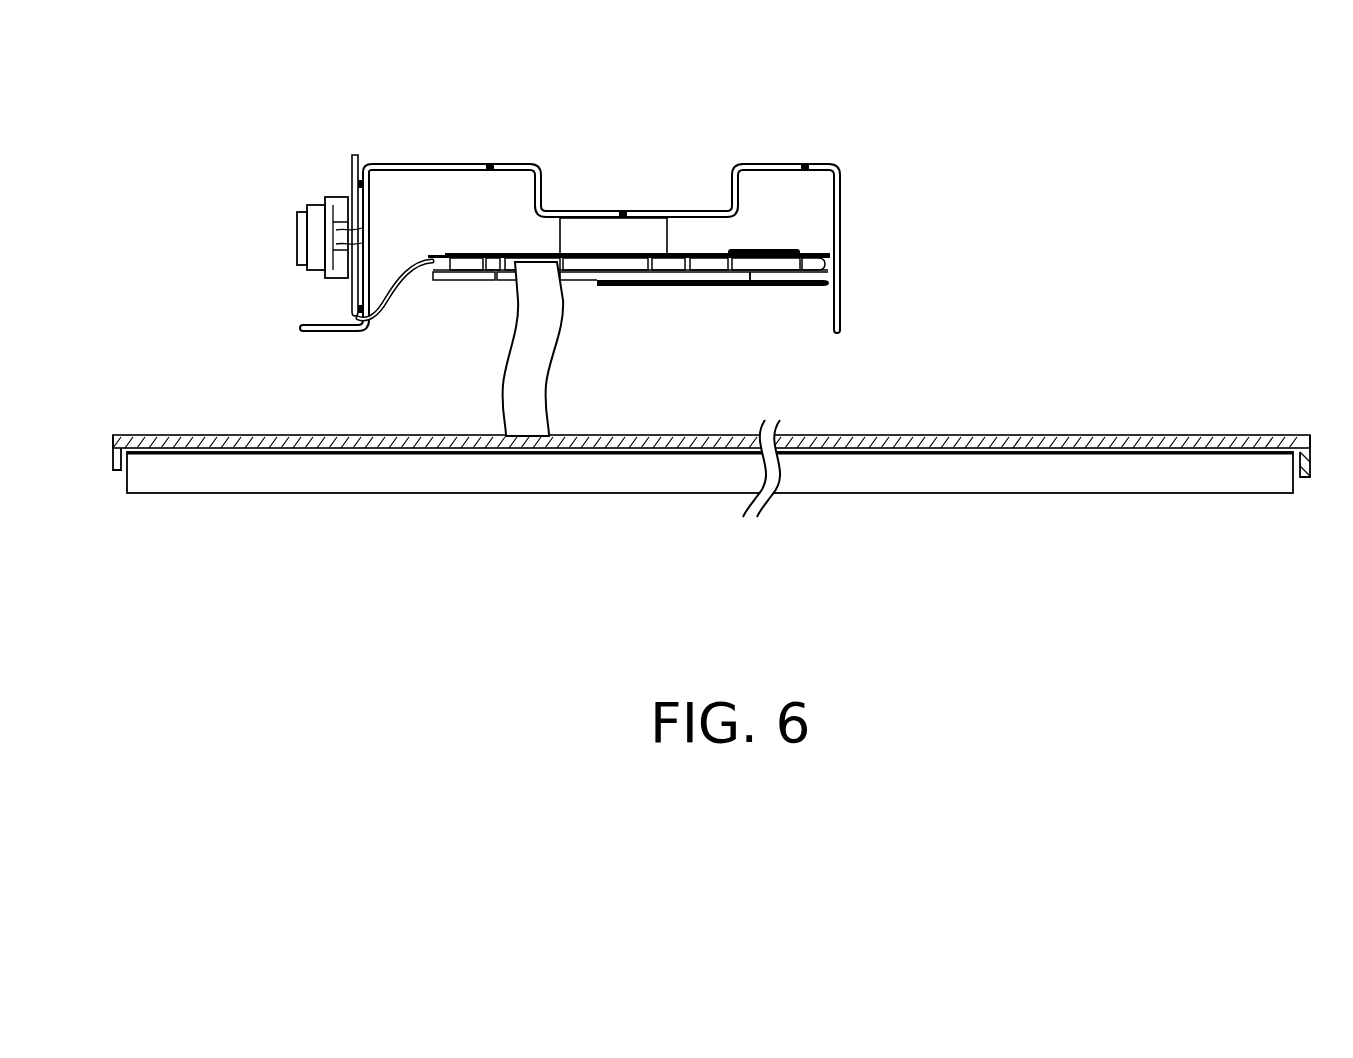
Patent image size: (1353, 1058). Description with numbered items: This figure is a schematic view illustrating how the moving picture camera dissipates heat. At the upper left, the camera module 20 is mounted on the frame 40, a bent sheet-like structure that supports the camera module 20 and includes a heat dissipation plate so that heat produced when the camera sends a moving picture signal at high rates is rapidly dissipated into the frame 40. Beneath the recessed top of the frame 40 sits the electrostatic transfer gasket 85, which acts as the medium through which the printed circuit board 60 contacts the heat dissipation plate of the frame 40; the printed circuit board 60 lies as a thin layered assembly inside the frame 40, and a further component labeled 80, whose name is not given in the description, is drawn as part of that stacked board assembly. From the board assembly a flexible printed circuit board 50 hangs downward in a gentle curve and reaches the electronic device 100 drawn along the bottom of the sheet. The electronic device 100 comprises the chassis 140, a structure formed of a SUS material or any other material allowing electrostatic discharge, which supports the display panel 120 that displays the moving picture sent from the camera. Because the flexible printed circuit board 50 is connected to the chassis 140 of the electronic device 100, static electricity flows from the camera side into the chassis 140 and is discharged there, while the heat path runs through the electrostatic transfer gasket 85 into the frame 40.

The camera module 20 is at (306, 202).
The frame 40 is at (795, 155).
The flexible printed circuit board 50 is at (546, 388).
The printed circuit board 60 is at (771, 285).
The printed circuit board 80 is at (805, 252).
The electrostatic transfer gasket 85 is at (648, 228).
The electronic device 100 is at (721, 503).
The display panel 120 is at (1272, 485).
The chassis 140 is at (1278, 438).